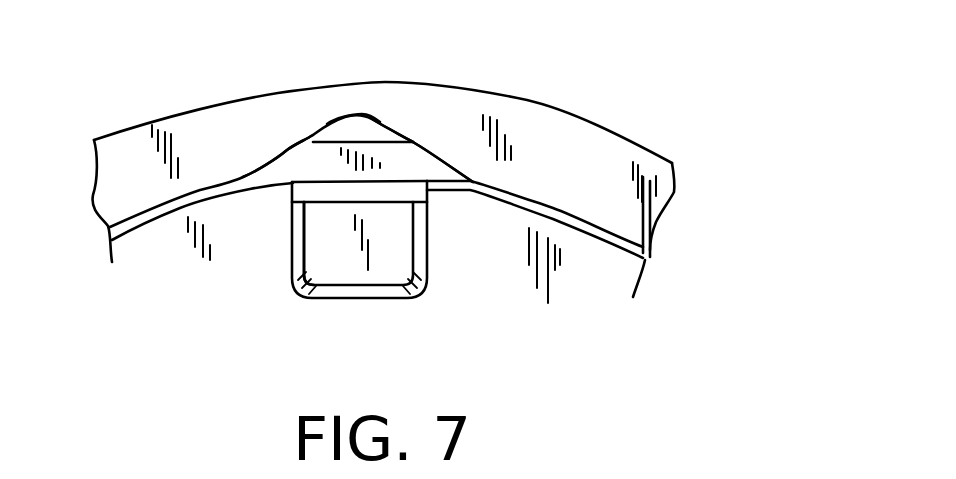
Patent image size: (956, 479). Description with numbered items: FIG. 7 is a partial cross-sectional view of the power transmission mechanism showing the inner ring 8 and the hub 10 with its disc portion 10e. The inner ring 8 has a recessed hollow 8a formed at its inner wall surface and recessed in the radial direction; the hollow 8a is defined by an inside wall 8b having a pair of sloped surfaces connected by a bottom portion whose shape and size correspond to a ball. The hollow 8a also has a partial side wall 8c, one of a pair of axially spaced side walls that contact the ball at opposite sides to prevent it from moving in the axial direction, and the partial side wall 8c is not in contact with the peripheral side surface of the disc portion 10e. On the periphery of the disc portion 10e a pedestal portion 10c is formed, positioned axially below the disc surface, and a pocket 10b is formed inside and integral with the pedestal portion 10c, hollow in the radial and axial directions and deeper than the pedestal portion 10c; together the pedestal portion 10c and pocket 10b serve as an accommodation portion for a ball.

The inner ring 8 is at (527, 100).
The recessed hollow 8a is at (397, 160).
The inside wall 8b is at (293, 143).
The partial side wall 8c is at (360, 130).
The hub 10 is at (471, 236).
The disc portion 10e is at (639, 278).
The pocket 10b is at (382, 258).
The pedestal portion 10c is at (332, 192).